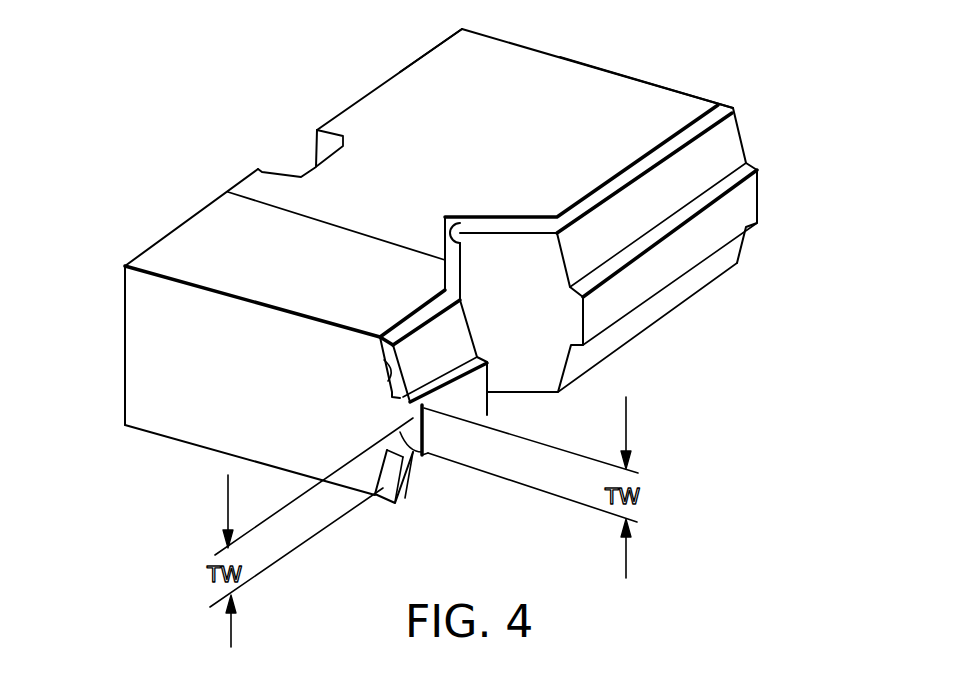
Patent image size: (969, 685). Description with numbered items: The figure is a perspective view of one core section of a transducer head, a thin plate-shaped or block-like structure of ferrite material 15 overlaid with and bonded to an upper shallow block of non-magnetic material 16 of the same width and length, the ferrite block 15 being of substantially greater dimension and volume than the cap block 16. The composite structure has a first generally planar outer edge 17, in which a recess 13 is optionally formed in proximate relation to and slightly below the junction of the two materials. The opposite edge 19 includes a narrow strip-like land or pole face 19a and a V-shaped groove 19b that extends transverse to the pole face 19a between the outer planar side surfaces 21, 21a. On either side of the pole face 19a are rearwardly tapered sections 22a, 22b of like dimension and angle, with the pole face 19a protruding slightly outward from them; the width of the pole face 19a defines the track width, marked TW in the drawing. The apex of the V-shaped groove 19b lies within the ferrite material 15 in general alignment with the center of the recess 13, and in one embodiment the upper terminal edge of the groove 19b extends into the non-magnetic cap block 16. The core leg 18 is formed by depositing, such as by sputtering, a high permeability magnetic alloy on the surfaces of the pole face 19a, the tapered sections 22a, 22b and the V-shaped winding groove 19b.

The recess 13 is at (307, 167).
The ferrite block 15 is at (467, 155).
The non-magnetic cap block 16 is at (150, 350).
The first generally planar outer edge 17 is at (376, 91).
The core leg 18 is at (725, 105).
The opposite edge 19 is at (760, 223).
The pole face 19a is at (430, 457).
The V-shaped groove 19b is at (455, 243).
The outer planar side surface 21 is at (600, 80).
The outer planar side surface 21a is at (187, 447).
The rearwardly tapered section 22a is at (386, 389).
The rearwardly tapered section 22b is at (403, 498).